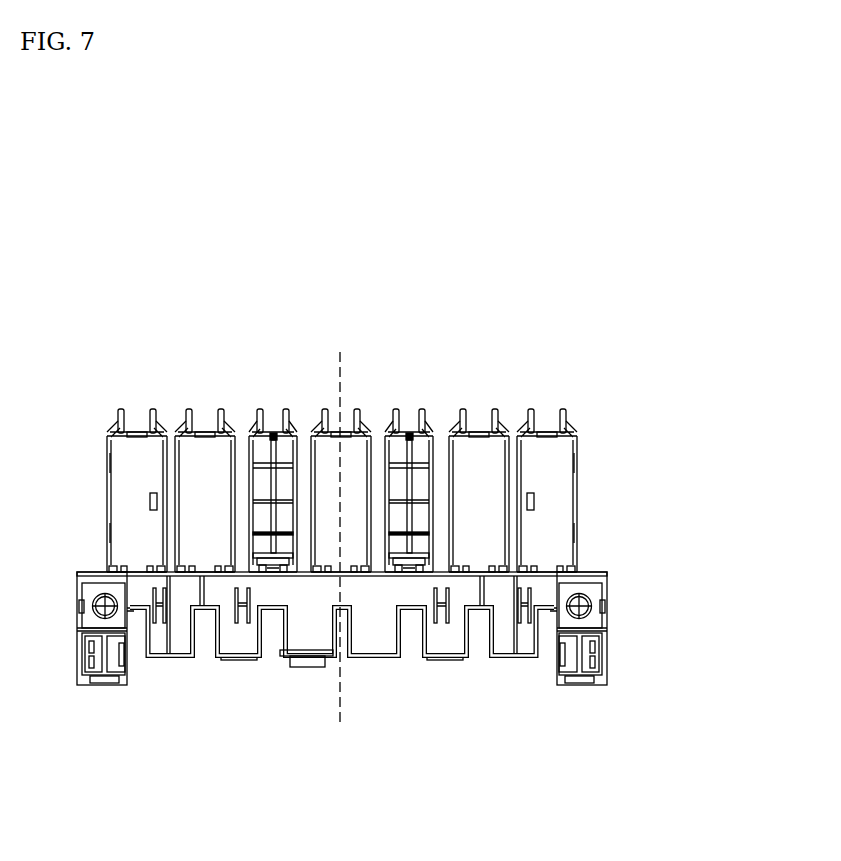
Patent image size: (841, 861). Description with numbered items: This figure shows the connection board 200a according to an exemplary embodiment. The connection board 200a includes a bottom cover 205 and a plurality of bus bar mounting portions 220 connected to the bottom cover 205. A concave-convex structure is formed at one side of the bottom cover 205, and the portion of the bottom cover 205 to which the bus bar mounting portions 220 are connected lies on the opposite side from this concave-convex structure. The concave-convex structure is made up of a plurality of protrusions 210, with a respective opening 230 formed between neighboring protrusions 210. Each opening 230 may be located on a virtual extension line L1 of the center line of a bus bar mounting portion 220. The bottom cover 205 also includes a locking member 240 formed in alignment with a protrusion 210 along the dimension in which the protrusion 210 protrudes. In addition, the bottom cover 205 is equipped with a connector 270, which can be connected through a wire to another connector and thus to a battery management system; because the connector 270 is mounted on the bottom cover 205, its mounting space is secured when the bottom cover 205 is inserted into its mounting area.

The connection board 200a is at (378, 276).
The bottom cover 205 is at (616, 601).
The protrusion 210 is at (382, 638).
The bus bar mounting portion 220 is at (283, 440).
The opening 230 is at (272, 650).
The locking member 240 is at (240, 630).
The connector 270 is at (305, 667).
The virtual extension line L1 is at (342, 708).